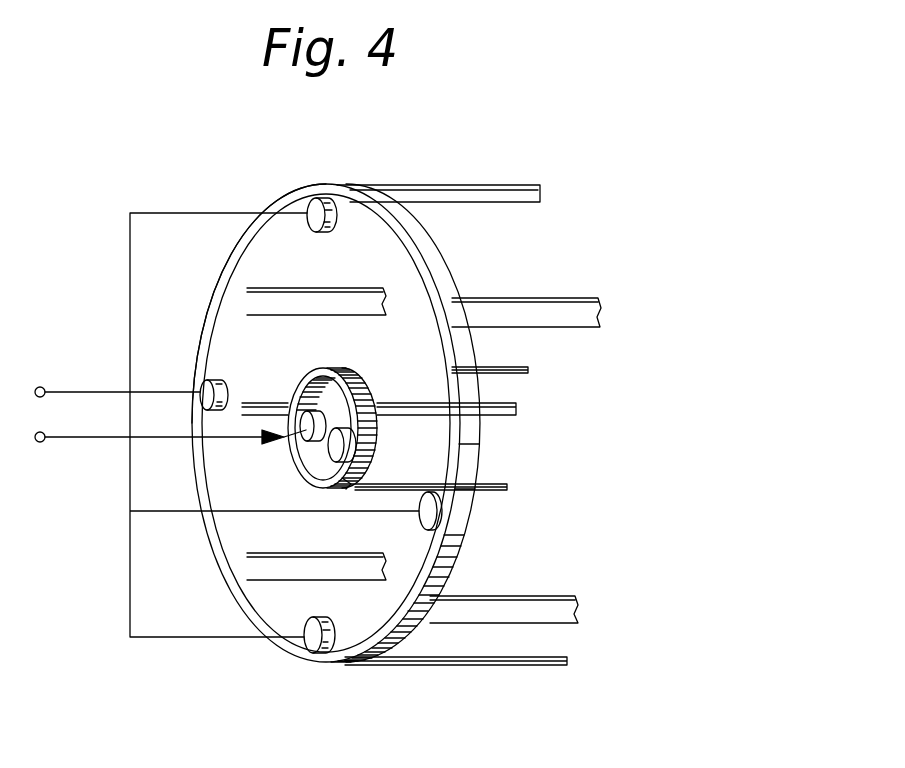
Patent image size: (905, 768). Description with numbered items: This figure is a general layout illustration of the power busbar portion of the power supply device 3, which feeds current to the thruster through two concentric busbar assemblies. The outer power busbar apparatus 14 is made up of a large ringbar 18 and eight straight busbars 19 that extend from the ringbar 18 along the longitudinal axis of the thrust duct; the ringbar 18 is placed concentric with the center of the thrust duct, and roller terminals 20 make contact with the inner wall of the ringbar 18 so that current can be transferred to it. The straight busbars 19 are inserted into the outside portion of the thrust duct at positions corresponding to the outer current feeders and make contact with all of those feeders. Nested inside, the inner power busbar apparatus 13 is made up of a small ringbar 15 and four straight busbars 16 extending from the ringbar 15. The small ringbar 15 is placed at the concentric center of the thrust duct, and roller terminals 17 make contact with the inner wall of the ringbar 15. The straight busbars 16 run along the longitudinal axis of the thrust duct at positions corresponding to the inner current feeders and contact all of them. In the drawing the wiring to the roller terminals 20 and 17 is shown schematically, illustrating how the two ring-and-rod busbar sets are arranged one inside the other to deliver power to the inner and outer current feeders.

The power supply device 3 is at (277, 167).
The inner power busbar apparatus 13 is at (281, 378).
The outer power busbar apparatus 14 is at (400, 168).
The small ringbar 15 is at (350, 482).
The straight busbar 16 is at (413, 418).
The roller terminals 17 is at (332, 449).
The ringbar 18 is at (232, 282).
The straight busbars 19 is at (548, 298).
The roller terminals 20 is at (203, 378).